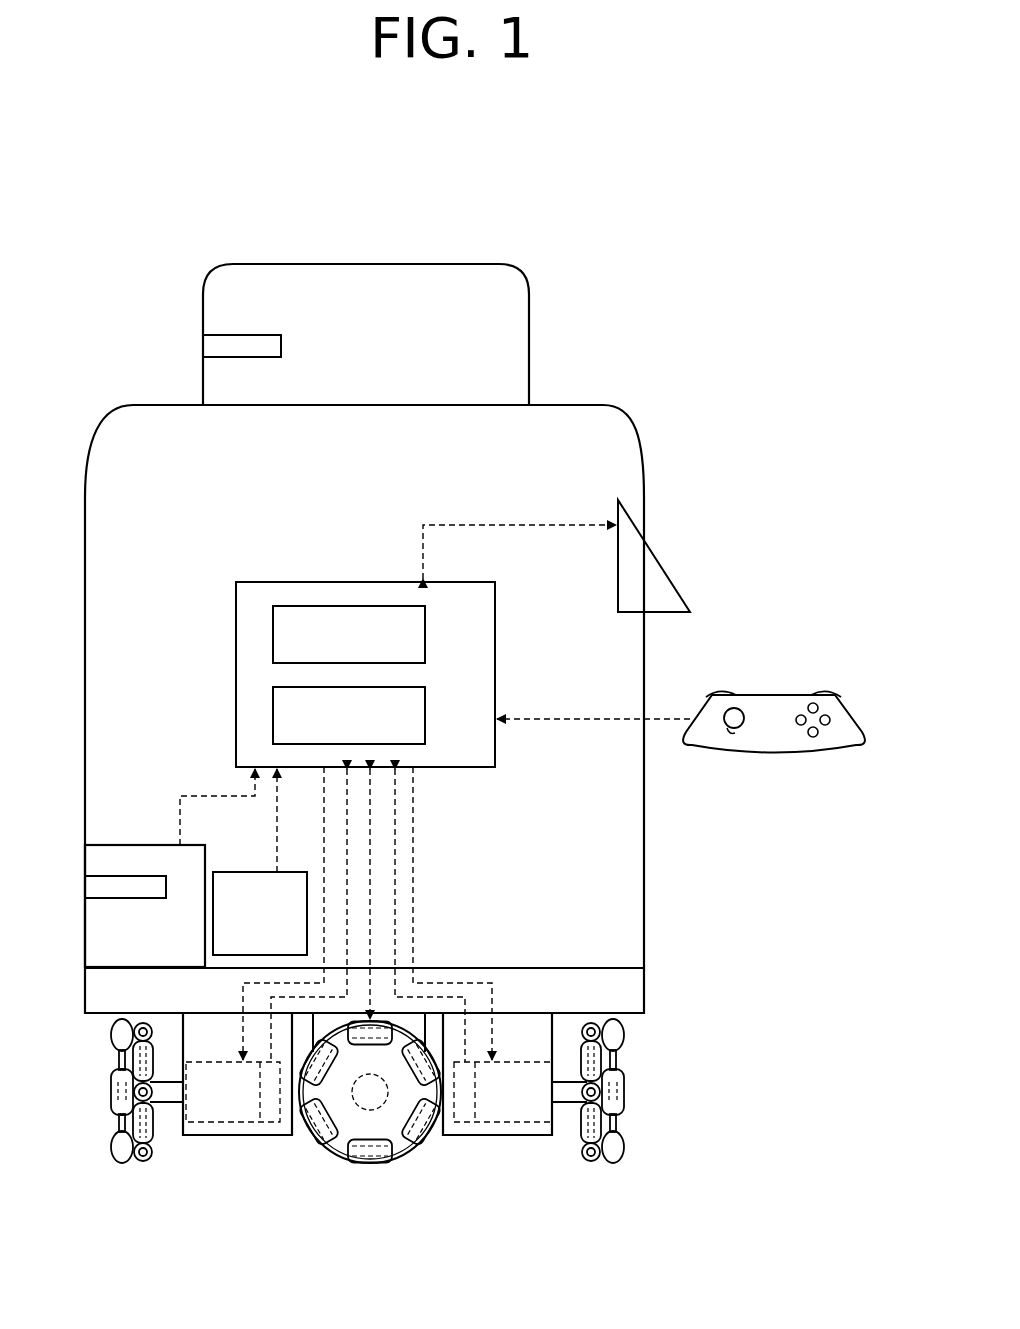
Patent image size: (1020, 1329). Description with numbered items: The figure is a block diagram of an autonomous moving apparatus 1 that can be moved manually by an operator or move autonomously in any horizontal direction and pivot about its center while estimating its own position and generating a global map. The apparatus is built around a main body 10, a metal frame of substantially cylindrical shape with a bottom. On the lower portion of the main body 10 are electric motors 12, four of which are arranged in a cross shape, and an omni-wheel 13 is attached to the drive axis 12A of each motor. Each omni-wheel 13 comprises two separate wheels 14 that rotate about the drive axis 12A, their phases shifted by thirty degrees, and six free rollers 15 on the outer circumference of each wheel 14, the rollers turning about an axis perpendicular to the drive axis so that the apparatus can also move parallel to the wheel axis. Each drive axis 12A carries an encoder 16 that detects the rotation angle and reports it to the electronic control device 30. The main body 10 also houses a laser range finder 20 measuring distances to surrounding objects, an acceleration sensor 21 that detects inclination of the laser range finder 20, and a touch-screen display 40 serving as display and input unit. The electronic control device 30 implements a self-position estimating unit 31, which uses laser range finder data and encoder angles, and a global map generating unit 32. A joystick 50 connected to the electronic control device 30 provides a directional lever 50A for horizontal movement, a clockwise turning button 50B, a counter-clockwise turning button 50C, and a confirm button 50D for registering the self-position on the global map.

The autonomous moving apparatus 1 is at (591, 226).
The main body 10 is at (583, 405).
The electric motor 12 is at (240, 1135).
The drive axis 12A is at (163, 1104).
The omni-wheel 13 is at (115, 1172).
The wheel 14 is at (118, 1090).
The free roller 15 is at (148, 1162).
The encoder 16 is at (270, 1135).
The laser range finder 20 is at (150, 845).
The acceleration sensor 21 is at (243, 872).
The electronic control device 30 is at (495, 672).
The self-position estimating unit 31 is at (425, 633).
The global map generating unit 32 is at (425, 716).
The touch-screen display 40 is at (655, 553).
The joystick 50 is at (774, 737).
The directional lever 50A is at (733, 736).
The clockwise turning button 50B is at (828, 693).
The counter-clockwise turning button 50C is at (720, 693).
The confirm button 50D is at (828, 738).